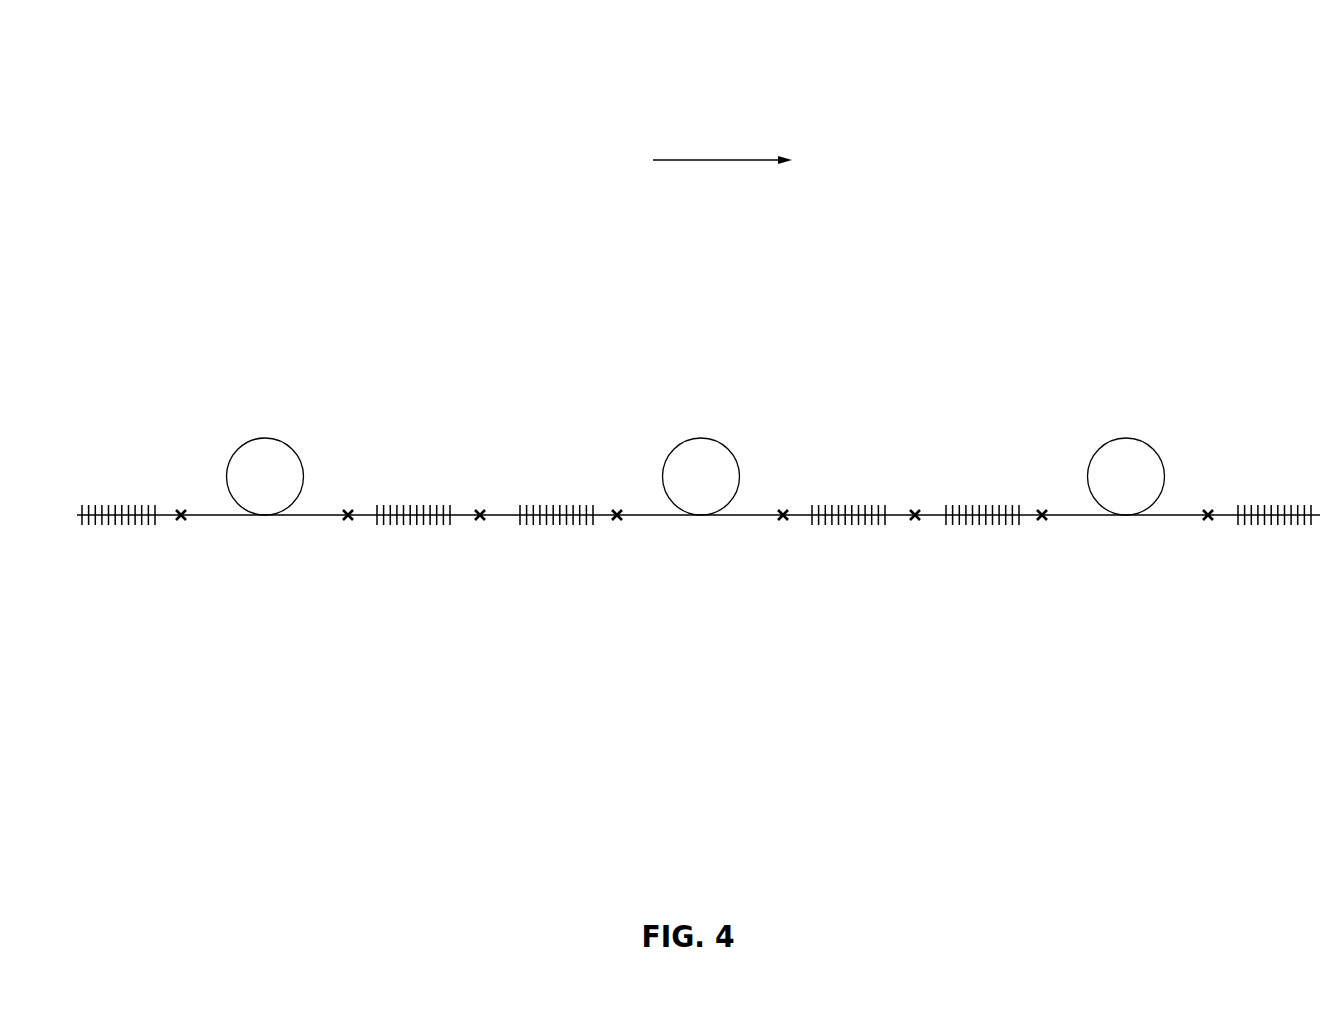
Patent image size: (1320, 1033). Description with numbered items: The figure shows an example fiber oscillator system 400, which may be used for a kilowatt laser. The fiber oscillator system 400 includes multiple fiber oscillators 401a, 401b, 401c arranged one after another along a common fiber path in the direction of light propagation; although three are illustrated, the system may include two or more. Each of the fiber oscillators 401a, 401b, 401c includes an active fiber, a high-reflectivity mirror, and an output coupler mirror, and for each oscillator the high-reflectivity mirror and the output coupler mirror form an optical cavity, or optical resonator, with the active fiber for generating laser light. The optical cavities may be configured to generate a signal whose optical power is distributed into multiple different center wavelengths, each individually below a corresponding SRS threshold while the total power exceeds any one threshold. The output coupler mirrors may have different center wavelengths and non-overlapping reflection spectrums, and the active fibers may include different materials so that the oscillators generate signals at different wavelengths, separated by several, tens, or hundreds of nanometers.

The fiber oscillator system 400 is at (195, 50).
The fiber oscillator 401a is at (318, 380).
The fiber oscillator 401b is at (702, 438).
The fiber oscillator 401c is at (1128, 439).